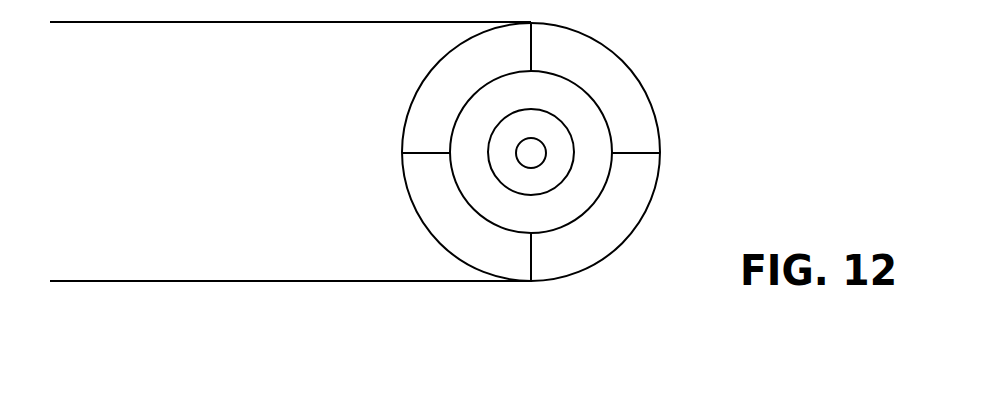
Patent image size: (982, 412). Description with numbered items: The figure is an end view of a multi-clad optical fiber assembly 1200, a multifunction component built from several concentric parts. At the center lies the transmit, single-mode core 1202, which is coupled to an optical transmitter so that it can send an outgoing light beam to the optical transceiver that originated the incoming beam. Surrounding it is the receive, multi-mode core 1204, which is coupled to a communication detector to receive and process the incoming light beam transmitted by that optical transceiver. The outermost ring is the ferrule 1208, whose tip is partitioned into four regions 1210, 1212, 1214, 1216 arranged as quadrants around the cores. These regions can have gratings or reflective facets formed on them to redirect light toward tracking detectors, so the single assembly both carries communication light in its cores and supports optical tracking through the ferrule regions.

The multi-clad optical fiber assembly 1200 is at (809, 74).
The transmit, single-mode core 1202 is at (520, 164).
The receive, multi-mode core 1204 is at (537, 196).
The ferrule 1208 is at (612, 255).
The region 1210 is at (482, 88).
The region 1212 is at (626, 88).
The region 1214 is at (322, 309).
The region 1216 is at (626, 240).